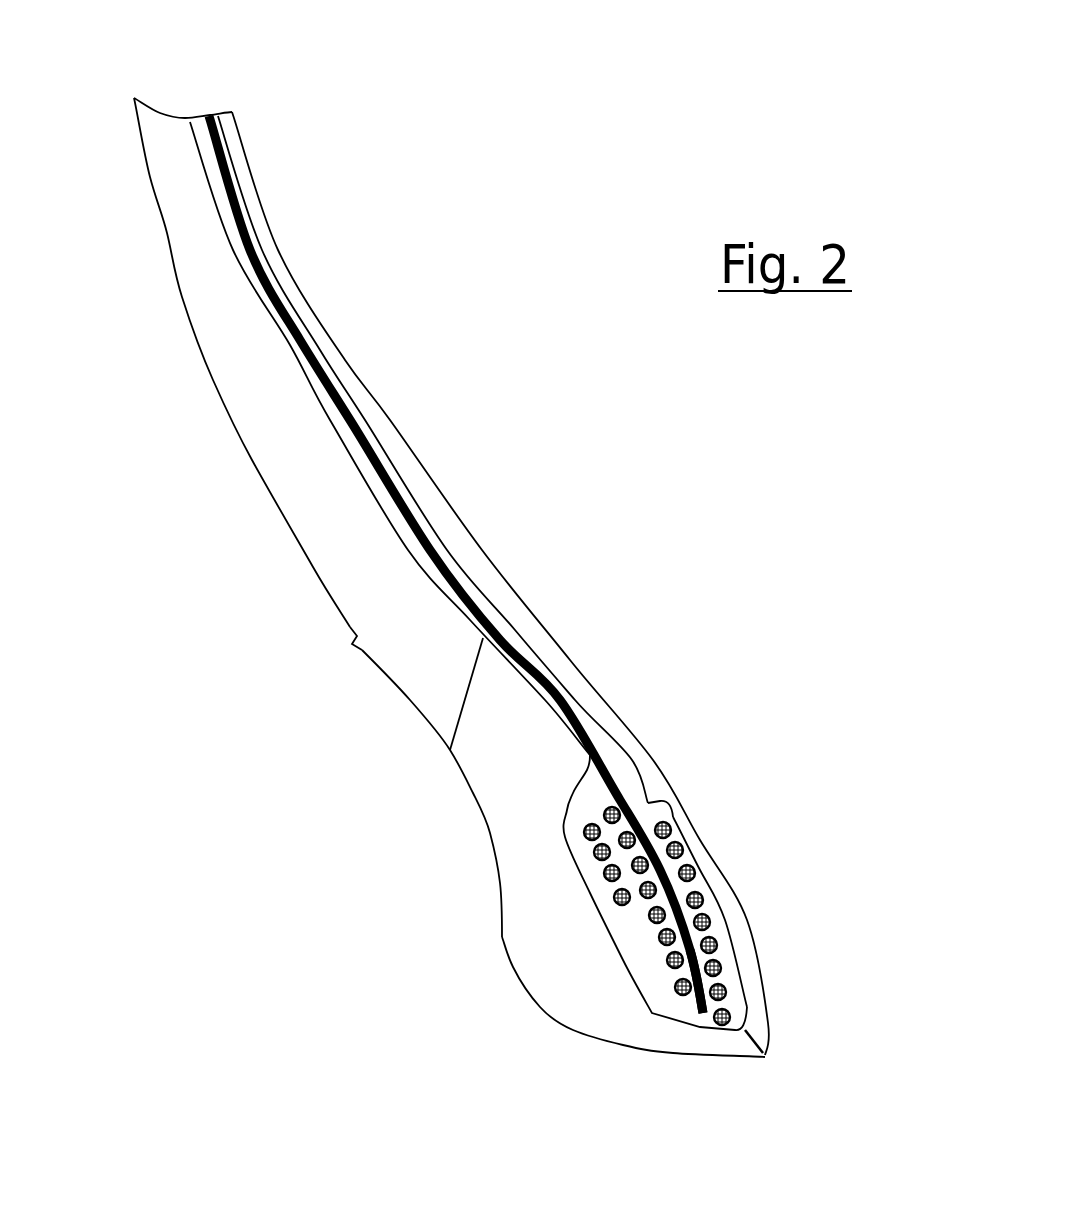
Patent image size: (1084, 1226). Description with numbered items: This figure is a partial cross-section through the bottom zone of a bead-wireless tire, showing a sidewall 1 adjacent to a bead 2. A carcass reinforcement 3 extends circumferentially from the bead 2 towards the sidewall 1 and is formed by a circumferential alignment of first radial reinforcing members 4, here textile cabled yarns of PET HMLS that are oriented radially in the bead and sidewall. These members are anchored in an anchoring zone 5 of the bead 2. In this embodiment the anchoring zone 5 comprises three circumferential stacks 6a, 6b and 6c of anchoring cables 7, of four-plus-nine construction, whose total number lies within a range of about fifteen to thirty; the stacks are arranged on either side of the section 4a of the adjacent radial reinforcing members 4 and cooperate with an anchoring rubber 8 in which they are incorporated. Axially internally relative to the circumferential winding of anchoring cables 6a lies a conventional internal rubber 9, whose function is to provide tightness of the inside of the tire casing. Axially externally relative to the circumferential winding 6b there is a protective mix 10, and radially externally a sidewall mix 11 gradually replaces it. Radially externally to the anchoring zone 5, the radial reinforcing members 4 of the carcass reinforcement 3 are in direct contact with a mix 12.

The sidewall 1 is at (308, 638).
The bead 2 is at (458, 944).
The carcass reinforcement 3 is at (212, 95).
The first radial reinforcing members 4 is at (268, 292).
The section of the adjacent first radial reinforcing members 4a is at (687, 902).
The anchoring zone 5 is at (717, 860).
The circumferential stack 6a is at (712, 958).
The circumferential stack 6b is at (678, 975).
The circumferential stack 6c is at (617, 888).
The anchoring cables 7 is at (623, 905).
The anchoring rubber 8 is at (620, 857).
The internal rubber 9 is at (455, 547).
The protective mix 10 is at (533, 798).
The sidewall mix 11 is at (297, 475).
The mix 12 is at (310, 363).